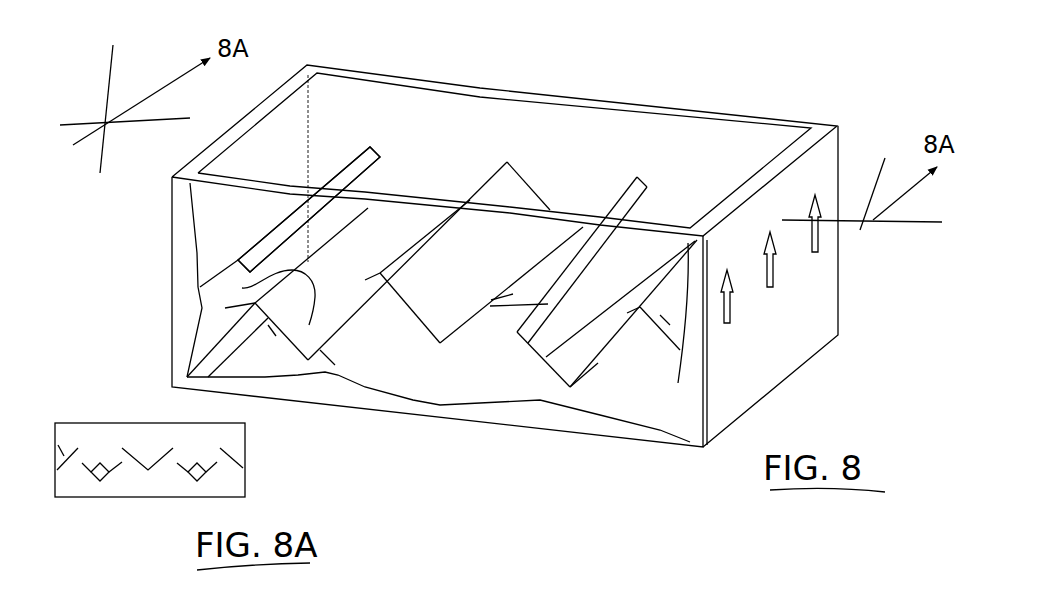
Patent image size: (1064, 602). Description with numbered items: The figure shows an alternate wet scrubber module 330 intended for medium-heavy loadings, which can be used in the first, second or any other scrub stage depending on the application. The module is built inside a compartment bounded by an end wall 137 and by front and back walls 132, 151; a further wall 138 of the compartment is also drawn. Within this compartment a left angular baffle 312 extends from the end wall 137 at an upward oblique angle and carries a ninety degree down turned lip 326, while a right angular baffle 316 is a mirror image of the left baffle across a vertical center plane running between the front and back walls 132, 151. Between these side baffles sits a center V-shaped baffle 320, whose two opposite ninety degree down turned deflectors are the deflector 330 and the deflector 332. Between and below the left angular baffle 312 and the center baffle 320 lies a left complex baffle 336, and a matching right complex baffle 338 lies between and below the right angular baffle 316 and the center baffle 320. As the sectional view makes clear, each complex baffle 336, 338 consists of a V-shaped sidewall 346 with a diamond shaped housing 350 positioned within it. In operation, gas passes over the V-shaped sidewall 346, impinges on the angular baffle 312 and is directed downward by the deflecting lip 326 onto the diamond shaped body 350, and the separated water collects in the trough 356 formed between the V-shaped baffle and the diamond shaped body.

In FIG. 8, the end wall 137 is at (268, 148).
In FIG. 8, the back wall 151 is at (512, 132).
In FIG. 8, the side wall 138 is at (815, 182).
In FIG. 8, the front wall 132 is at (380, 400).
In FIG. 8, the left angular baffle 312 is at (348, 146).
In FIG. 8A, the left angular baffle 312 is at (60, 445).
In FIG. 8, the down turned lip 326 is at (393, 150).
In FIG. 8, the module 330 is at (478, 185).
In FIG. 8, the down turned deflector 332 is at (637, 187).
In FIG. 8, the center V-shaped baffle 320 is at (465, 302).
In FIG. 8A, the center V-shaped baffle 320 is at (140, 458).
In FIG. 8, the trough 356 is at (242, 288).
In FIG. 8, the diamond shaped housing 350 is at (225, 308).
In FIG. 8, the left complex baffle 336 is at (333, 368).
In FIG. 8A, the left complex baffle 336 is at (100, 482).
In FIG. 8, the V-shaped sidewall 346 is at (276, 335).
In FIG. 8, the right complex baffle 338 is at (592, 380).
In FIG. 8A, the right complex baffle 338 is at (192, 481).
In FIG. 8, the right angular baffle 316 is at (667, 320).
In FIG. 8A, the right angular baffle 316 is at (235, 455).